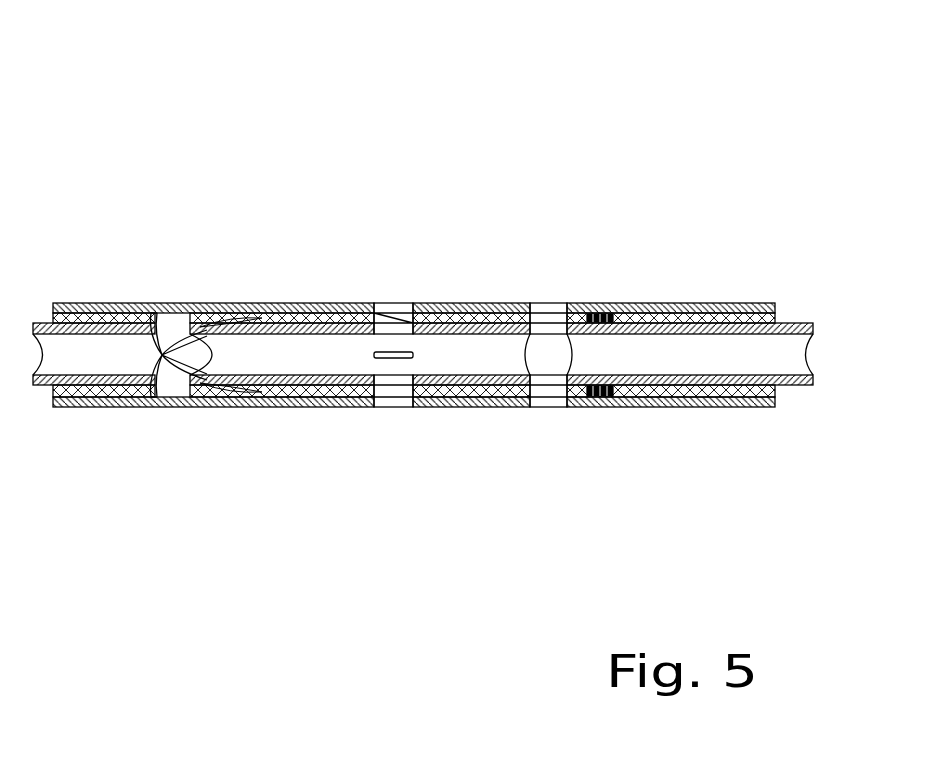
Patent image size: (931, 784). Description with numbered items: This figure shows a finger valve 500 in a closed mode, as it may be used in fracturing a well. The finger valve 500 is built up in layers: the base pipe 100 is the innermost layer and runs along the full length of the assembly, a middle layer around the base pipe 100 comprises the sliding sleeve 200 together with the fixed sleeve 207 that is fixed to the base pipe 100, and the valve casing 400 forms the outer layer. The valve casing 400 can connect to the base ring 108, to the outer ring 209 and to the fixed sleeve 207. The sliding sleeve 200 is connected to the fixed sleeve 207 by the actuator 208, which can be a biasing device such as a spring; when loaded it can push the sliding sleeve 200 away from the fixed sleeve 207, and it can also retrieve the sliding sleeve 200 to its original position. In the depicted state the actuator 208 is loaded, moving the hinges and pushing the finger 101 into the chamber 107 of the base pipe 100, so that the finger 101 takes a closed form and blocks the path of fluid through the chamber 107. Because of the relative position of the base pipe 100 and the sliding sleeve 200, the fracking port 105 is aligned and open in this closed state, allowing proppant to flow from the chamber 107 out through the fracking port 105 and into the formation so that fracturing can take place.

The base pipe 100 is at (620, 368).
The finger 101 is at (222, 400).
The fracking port 105 is at (387, 407).
The chamber 107 is at (233, 352).
The base ring 108 is at (70, 345).
The sliding sleeve 200 is at (498, 407).
The fixed sleeve 207 is at (692, 303).
The actuator 208 is at (592, 305).
The outer ring 209 is at (88, 403).
The valve casing 400 is at (160, 307).
The finger valve 500 is at (632, 118).